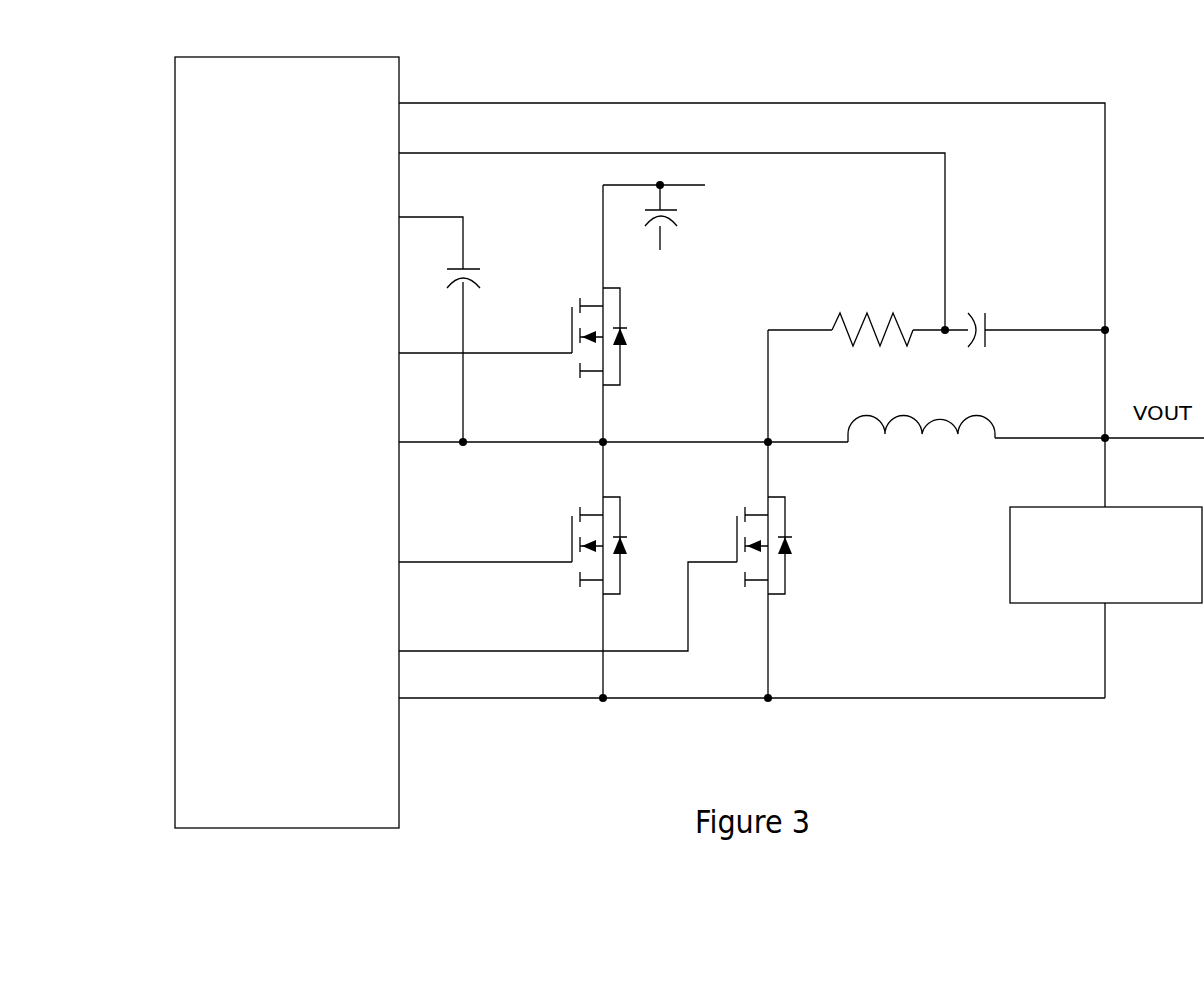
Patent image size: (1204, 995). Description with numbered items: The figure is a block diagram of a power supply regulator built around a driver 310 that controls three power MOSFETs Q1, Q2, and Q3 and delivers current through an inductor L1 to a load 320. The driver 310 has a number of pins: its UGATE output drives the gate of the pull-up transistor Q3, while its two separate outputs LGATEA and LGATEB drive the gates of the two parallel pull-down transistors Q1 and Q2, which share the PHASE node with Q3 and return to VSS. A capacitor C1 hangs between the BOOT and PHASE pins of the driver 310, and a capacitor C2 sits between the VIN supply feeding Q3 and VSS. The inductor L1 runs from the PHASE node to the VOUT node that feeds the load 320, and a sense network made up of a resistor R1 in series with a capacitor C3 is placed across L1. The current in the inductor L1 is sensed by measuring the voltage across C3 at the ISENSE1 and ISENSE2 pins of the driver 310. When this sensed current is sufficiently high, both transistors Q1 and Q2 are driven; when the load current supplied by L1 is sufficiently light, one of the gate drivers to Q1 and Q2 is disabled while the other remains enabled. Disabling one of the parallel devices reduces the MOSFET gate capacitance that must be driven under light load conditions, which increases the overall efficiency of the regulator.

The driver 310 is at (287, 442).
The load 320 is at (1106, 555).
The power MOSFET Q1 is at (619, 545).
The power MOSFET Q2 is at (783, 545).
The power MOSFET Q3 is at (620, 336).
The capacitor C1 is at (487, 274).
The capacitor C2 is at (695, 225).
The sense device C3 is at (998, 318).
The sense device R1 is at (872, 317).
The inductor L1 is at (921, 409).